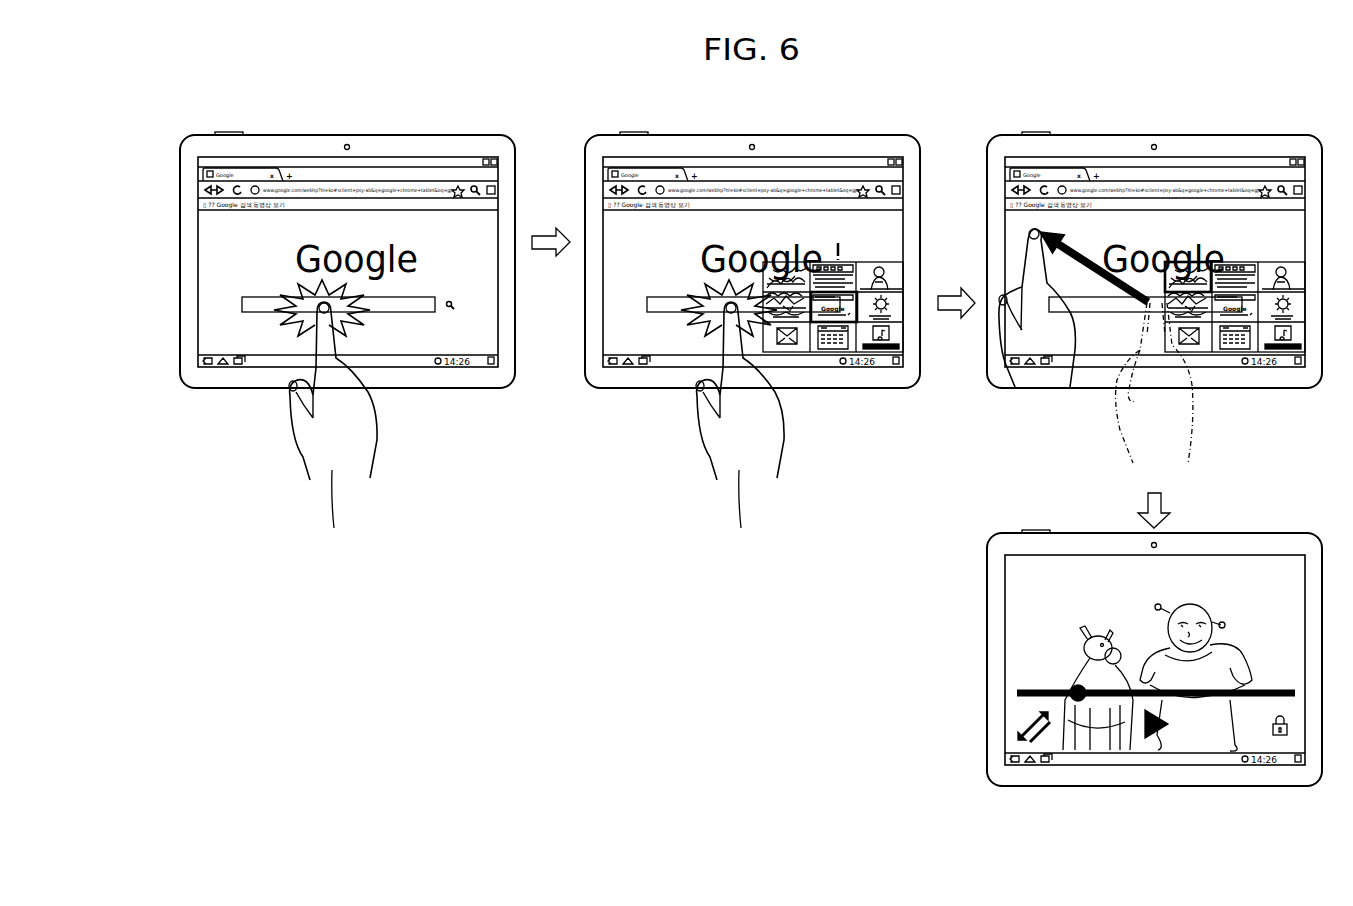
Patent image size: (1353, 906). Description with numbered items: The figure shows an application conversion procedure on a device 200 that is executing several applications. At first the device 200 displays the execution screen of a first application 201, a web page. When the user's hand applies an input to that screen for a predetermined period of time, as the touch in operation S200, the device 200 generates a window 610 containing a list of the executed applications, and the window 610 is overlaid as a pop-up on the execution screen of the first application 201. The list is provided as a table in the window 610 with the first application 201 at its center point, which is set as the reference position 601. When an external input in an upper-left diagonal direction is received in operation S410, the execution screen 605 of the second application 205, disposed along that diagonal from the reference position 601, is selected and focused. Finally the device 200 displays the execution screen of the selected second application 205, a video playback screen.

The device 200 is at (453, 135).
The first application 201 is at (316, 220).
The reference position 601 is at (852, 293).
The execution screen of the second application 605 is at (1195, 257).
The window 610 is at (838, 248).
The second application 205 is at (1222, 573).
The operation of receiving an external input S200 is at (325, 418).
The operation of receiving an external input in a pre-set direction S410 is at (1127, 462).